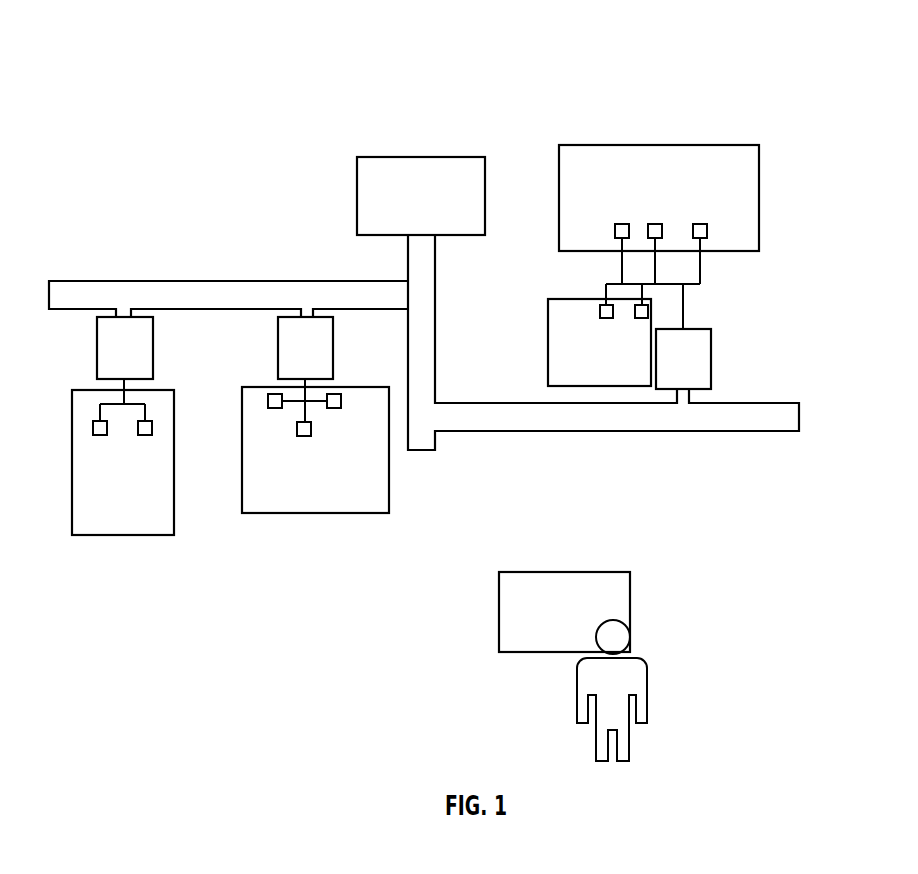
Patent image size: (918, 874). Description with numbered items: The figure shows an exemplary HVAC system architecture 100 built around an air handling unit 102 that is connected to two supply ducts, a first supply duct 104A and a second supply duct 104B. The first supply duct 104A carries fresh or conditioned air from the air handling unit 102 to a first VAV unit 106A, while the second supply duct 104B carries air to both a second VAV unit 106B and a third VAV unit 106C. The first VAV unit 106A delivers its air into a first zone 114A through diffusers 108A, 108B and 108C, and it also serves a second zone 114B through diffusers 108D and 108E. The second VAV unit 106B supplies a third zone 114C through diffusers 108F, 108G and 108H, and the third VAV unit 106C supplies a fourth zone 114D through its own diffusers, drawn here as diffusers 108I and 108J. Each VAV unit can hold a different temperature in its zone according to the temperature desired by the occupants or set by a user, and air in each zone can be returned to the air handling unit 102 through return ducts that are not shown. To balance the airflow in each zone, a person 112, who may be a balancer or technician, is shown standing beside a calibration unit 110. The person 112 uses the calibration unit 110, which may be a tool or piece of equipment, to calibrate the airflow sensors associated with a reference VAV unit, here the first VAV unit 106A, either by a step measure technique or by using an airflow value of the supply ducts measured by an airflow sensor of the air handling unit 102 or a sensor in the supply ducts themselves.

The system architecture 100 is at (527, 76).
The air handling unit 102 is at (430, 156).
The first supply duct 104A is at (799, 411).
The second supply duct 104B is at (288, 297).
The first VAV unit 106A is at (711, 348).
The second VAV unit 106B is at (278, 338).
The third VAV unit 106C is at (97, 338).
The diffuser 108A is at (707, 231).
The diffuser 108B is at (655, 224).
The diffuser 108C is at (615, 230).
The diffuser 108D is at (600, 309).
The diffuser 108E is at (636, 318).
The diffuser 108F is at (338, 408).
The diffuser 108G is at (304, 436).
The diffuser 108H is at (270, 409).
The diffuser 108I is at (152, 427).
The diffuser 108J is at (93, 427).
The calibration unit 110 is at (557, 571).
The person 112 is at (646, 672).
The first zone 114A is at (759, 180).
The second zone 114B is at (548, 361).
The third zone 114C is at (378, 485).
The fourth zone 114D is at (174, 525).